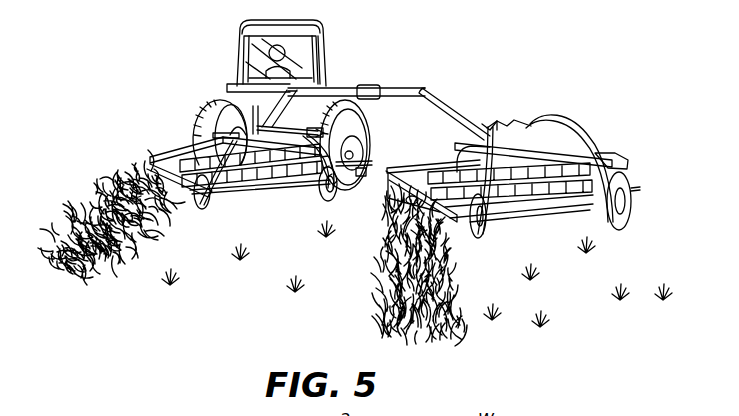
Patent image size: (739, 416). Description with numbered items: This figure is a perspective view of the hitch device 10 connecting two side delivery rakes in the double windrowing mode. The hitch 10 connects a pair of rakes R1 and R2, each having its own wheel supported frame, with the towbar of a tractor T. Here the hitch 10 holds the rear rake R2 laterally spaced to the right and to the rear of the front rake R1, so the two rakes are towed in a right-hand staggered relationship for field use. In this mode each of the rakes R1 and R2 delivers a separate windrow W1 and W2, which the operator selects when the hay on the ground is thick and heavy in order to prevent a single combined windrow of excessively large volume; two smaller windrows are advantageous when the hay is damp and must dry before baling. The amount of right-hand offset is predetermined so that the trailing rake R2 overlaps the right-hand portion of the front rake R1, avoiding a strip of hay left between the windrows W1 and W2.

The tractor T is at (326, 33).
The hitch device 10 is at (413, 85).
The first windrow W1 is at (81, 197).
The first rake R1 is at (274, 193).
The second windrow W2 is at (459, 295).
The second rake R2 is at (537, 219).